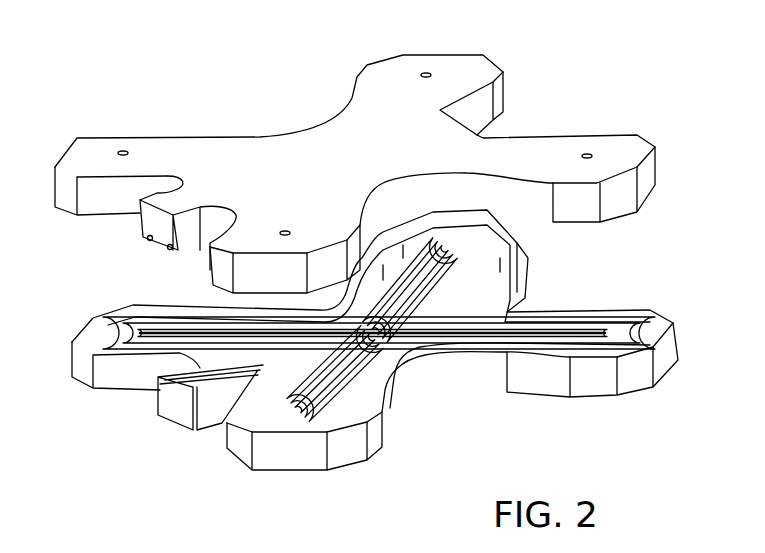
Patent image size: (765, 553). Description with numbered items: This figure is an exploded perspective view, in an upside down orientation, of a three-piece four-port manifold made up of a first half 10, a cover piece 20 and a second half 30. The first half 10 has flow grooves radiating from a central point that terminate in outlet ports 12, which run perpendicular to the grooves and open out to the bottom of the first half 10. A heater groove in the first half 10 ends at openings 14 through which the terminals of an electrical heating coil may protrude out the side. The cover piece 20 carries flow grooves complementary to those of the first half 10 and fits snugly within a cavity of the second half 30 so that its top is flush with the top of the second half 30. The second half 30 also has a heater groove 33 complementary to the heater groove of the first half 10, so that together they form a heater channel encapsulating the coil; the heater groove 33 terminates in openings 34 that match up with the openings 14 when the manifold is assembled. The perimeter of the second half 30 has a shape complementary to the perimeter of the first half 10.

The first half 10 is at (652, 175).
The outlet ports 12 is at (121, 150).
The openings 14 is at (148, 240).
The cover piece 20 is at (574, 332).
The second half 30 is at (375, 340).
The heater groove 33 is at (505, 240).
The openings 34 is at (157, 381).